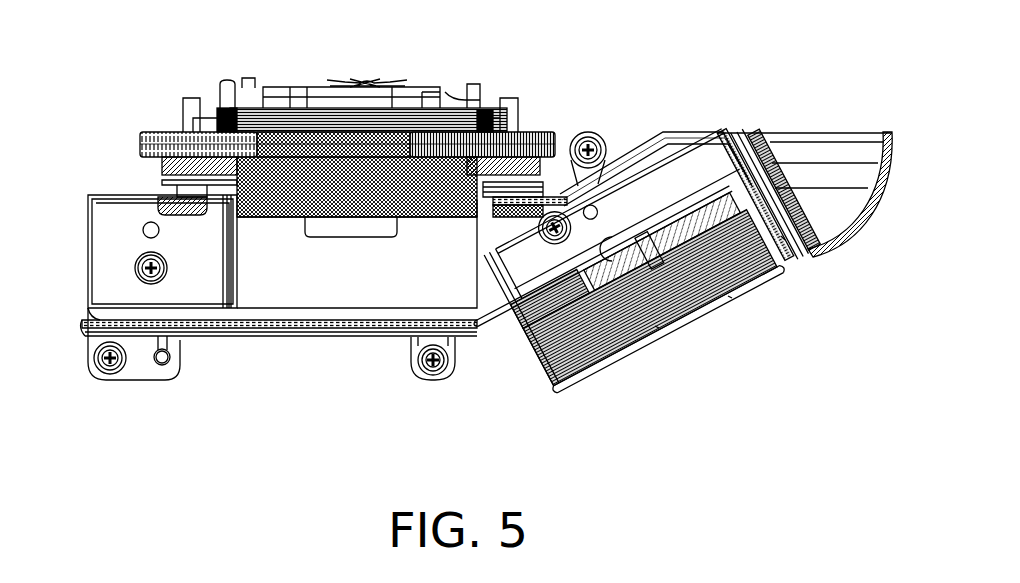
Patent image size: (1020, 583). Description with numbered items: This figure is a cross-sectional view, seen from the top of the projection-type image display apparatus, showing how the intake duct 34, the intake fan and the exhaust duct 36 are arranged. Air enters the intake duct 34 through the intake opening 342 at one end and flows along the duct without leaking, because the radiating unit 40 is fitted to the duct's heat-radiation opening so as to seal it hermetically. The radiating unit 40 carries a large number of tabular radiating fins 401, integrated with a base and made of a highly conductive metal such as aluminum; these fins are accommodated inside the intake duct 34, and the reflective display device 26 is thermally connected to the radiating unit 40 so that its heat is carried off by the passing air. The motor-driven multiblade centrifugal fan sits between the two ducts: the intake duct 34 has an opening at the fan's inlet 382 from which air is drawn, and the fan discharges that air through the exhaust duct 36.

The reflective display device 26 is at (440, 100).
The intake duct 34 is at (321, 200).
The exhaust duct 36 is at (853, 235).
The radiating unit 40 is at (278, 218).
The intake opening 342 is at (88, 213).
The inlet 382 is at (637, 263).
The radiating fins 401 is at (528, 112).